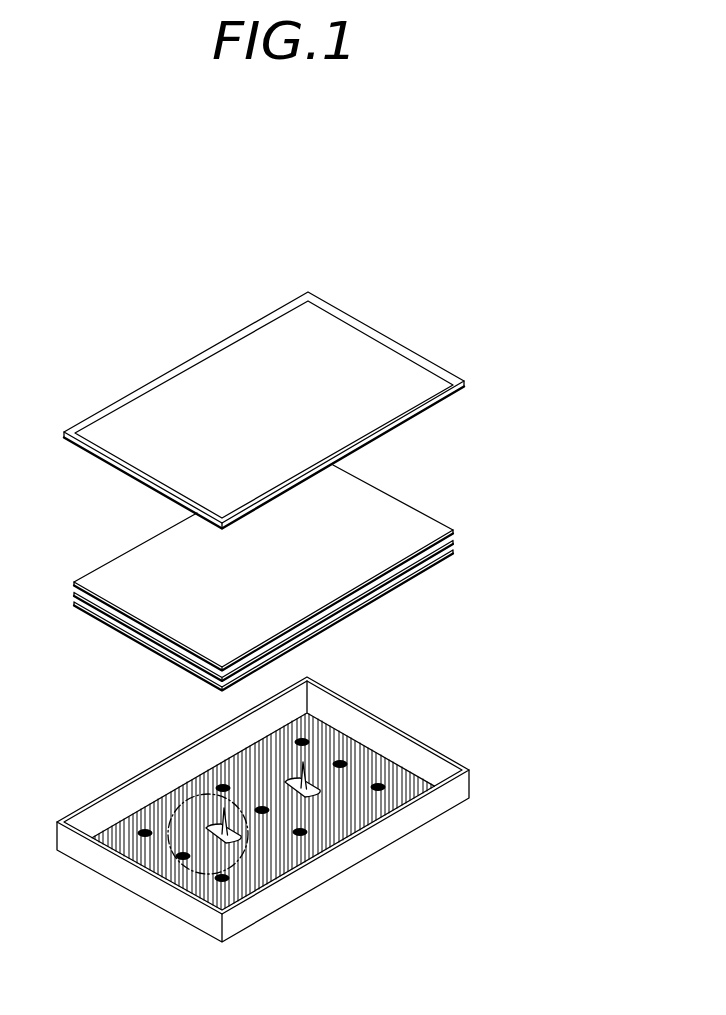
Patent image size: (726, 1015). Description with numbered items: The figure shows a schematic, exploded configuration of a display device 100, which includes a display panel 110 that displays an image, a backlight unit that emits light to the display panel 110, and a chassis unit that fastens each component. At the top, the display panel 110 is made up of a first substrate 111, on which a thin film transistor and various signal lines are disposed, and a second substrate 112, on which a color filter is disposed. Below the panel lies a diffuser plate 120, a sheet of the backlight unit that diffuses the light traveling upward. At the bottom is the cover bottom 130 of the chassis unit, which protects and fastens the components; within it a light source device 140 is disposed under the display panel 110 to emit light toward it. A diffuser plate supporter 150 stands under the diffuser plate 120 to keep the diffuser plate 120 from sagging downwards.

The display device 100 is at (54, 208).
The display panel 110 is at (455, 280).
The first substrate 111 is at (395, 367).
The second substrate 112 is at (423, 363).
The diffuser plate 120 is at (470, 535).
The cover bottom 130 is at (447, 773).
The light source device 140 is at (215, 878).
The diffuser plate supporter 150 is at (310, 797).